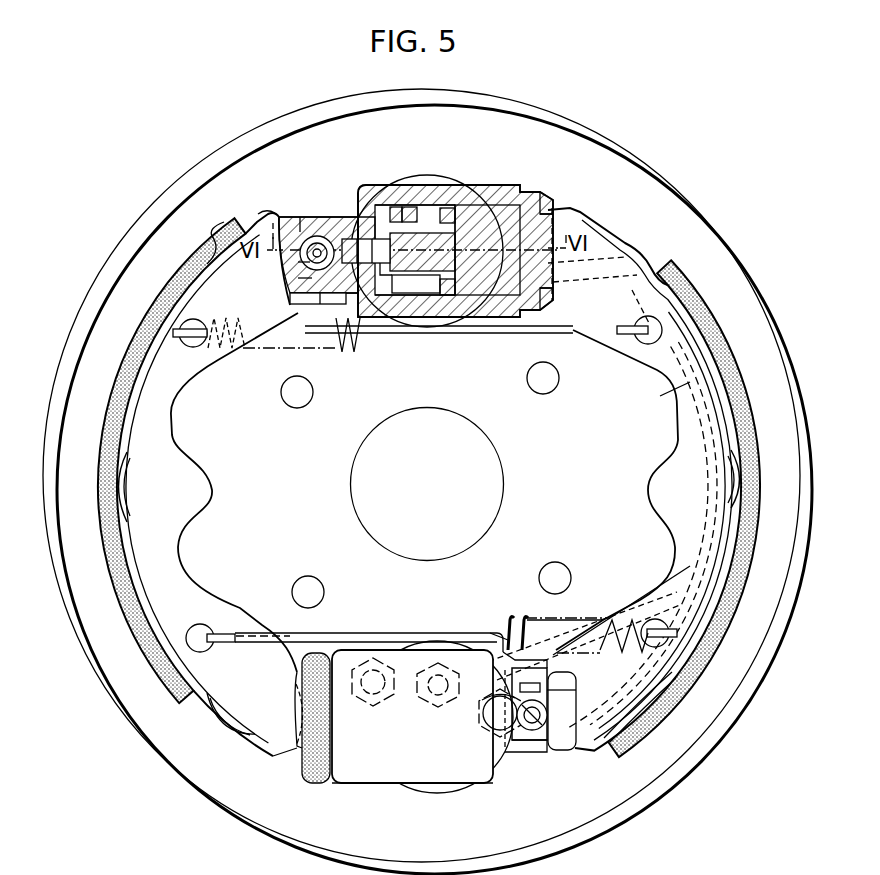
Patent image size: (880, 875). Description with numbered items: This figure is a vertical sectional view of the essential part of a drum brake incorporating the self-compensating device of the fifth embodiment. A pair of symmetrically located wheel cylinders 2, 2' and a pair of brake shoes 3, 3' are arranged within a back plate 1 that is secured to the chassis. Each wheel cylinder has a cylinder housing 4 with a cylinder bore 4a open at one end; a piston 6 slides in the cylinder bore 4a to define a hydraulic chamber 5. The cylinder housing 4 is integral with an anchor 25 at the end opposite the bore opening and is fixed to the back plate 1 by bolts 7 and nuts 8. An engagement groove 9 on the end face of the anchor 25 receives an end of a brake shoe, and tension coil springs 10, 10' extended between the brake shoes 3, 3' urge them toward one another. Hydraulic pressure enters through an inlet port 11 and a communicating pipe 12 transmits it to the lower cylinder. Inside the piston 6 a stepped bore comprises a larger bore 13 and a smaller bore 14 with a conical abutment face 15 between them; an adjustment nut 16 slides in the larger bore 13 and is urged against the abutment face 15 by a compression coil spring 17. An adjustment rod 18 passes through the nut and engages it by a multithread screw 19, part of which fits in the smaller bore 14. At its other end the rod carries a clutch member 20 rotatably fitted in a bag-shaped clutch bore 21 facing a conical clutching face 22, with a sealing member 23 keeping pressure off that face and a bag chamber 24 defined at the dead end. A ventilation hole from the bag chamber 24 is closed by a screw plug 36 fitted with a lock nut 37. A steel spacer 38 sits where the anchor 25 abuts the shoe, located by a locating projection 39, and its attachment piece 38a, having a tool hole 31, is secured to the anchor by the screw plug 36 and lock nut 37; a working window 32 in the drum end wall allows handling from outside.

The back plate 1 is at (630, 175).
The wheel cylinder 2 is at (425, 236).
The wheel cylinder 2' is at (422, 730).
The brake shoe 3 is at (424, 492).
The brake shoe 3' is at (660, 396).
The cylinder housing 4 is at (468, 185).
The cylinder bore 4a is at (437, 185).
The hydraulic chamber 5 is at (370, 232).
The piston 6 is at (284, 712).
The bolt 7 is at (362, 672).
The nut 8 is at (364, 696).
The engagement groove 9 is at (416, 249).
The tension coil spring 10 is at (345, 347).
The tension coil spring 10' is at (509, 617).
The inlet port 11 is at (369, 192).
The communicating pipe 12 is at (706, 478).
The larger bore 13 is at (406, 296).
The smaller bore 14 is at (459, 223).
The conical abutment face 15 is at (435, 298).
The adjustment nut 16 is at (416, 204).
The compression coil spring 17 is at (400, 204).
The adjustment rod 18 is at (370, 276).
The multithread screw 19 is at (434, 252).
The clutch member 20 is at (366, 239).
The clutch bore 21 is at (320, 304).
The conical clutching face 22 is at (330, 222).
The sealing member 23 is at (335, 298).
The bag chamber 24 is at (292, 260).
The anchor 25 is at (304, 220).
The tool hole 31 is at (526, 691).
The working window 32 is at (490, 696).
The screw plug 36 is at (538, 732).
The lock nut 37 is at (556, 707).
The spacer 38 is at (303, 264).
The attachment piece 38a is at (303, 286).
The locating projection 39 is at (272, 221).